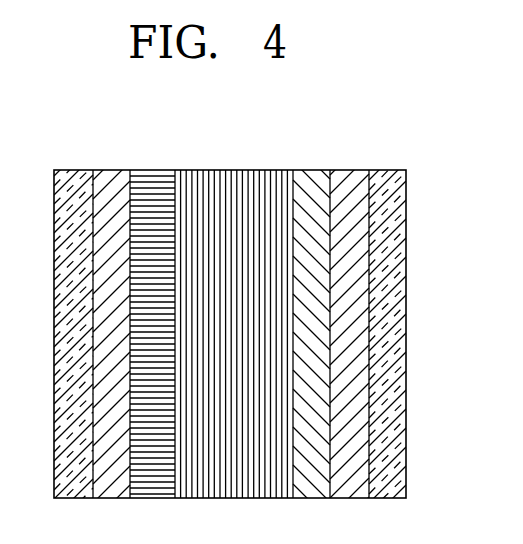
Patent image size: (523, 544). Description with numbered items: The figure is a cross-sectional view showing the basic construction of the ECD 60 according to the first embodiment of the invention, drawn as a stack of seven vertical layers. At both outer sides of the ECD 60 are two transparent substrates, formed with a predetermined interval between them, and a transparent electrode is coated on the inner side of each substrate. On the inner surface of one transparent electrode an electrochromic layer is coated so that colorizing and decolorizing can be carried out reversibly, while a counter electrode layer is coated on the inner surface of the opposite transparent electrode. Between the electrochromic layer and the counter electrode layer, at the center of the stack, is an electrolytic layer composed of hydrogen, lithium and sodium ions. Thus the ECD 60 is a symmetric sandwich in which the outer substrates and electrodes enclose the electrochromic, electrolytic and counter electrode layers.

The ECD 60 is at (412, 203).